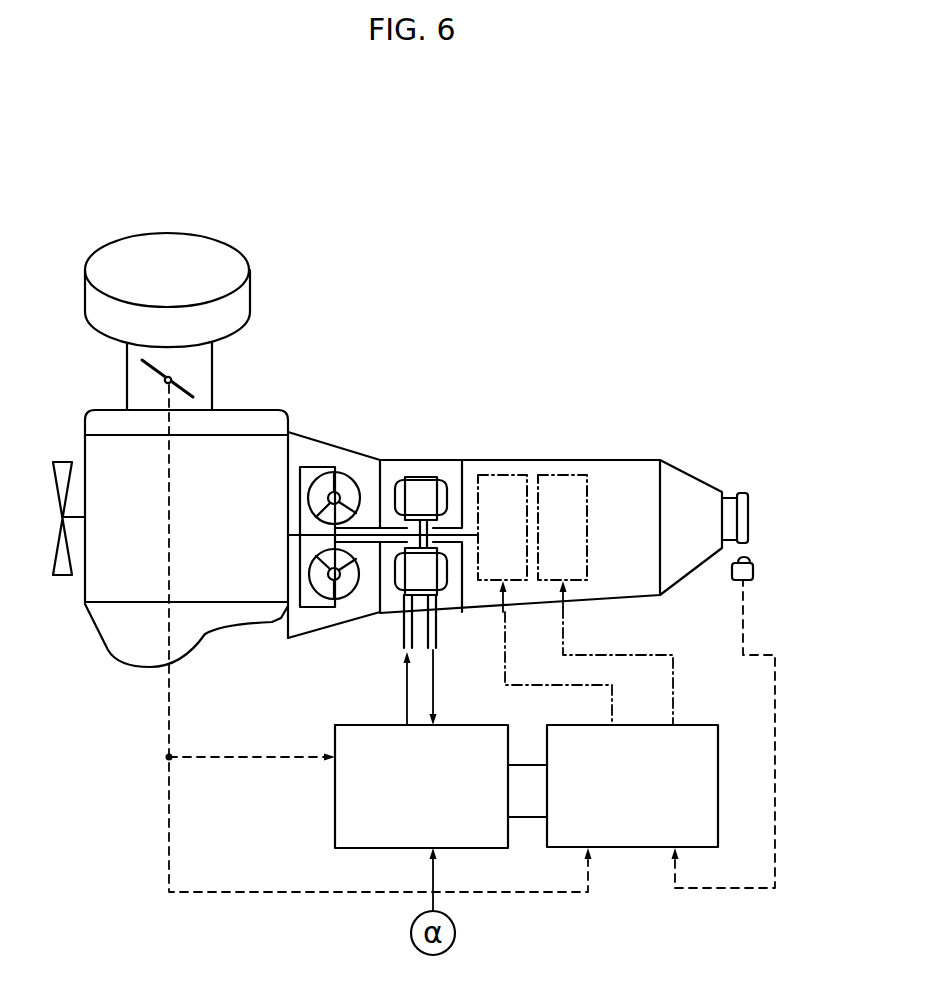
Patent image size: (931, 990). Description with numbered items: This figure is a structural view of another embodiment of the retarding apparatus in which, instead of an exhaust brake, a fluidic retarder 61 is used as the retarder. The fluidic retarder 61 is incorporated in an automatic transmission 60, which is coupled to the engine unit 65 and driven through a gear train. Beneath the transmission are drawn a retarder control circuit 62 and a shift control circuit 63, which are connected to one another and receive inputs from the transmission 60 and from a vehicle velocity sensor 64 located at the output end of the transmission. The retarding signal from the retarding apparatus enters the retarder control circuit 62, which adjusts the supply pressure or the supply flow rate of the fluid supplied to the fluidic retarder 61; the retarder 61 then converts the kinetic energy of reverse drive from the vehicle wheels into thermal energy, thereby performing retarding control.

The automatic transmission 60 is at (514, 452).
The fluidic retarder 61 is at (418, 466).
The retarder control circuit 62 is at (352, 725).
The shift control circuit 63 is at (632, 848).
The vehicle velocity sensor 64 is at (755, 573).
The engine unit 65 is at (258, 404).